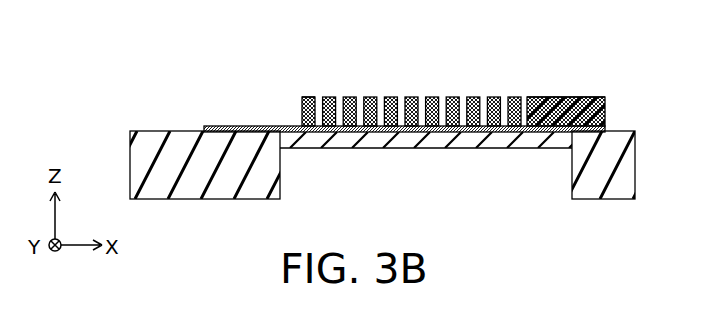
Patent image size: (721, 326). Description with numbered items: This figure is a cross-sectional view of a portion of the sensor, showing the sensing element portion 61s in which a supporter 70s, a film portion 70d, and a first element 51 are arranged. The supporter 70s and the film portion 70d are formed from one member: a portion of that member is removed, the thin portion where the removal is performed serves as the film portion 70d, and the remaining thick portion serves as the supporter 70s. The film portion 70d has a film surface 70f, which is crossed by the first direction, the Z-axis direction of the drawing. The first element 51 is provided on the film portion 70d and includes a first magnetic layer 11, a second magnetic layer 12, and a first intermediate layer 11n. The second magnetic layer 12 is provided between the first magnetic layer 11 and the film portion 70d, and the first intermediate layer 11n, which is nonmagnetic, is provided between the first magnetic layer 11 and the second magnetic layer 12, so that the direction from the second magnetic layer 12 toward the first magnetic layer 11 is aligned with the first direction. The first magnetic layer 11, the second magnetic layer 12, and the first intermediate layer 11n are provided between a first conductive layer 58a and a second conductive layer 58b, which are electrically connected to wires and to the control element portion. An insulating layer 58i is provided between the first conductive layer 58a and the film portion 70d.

The sensor element 61s is at (602, 58).
The supporter 70s is at (158, 168).
The film portion 70d is at (413, 138).
The film surface 70f is at (380, 136).
The second conductive layer 58b is at (236, 126).
The first conductive layer 58a is at (307, 97).
The insulating layer 58i is at (596, 113).
The first element 51 is at (358, 84).
The first magnetic layer 11 is at (303, 99).
The first intermediate layer 11n is at (304, 112).
The second magnetic layer 12 is at (304, 122).